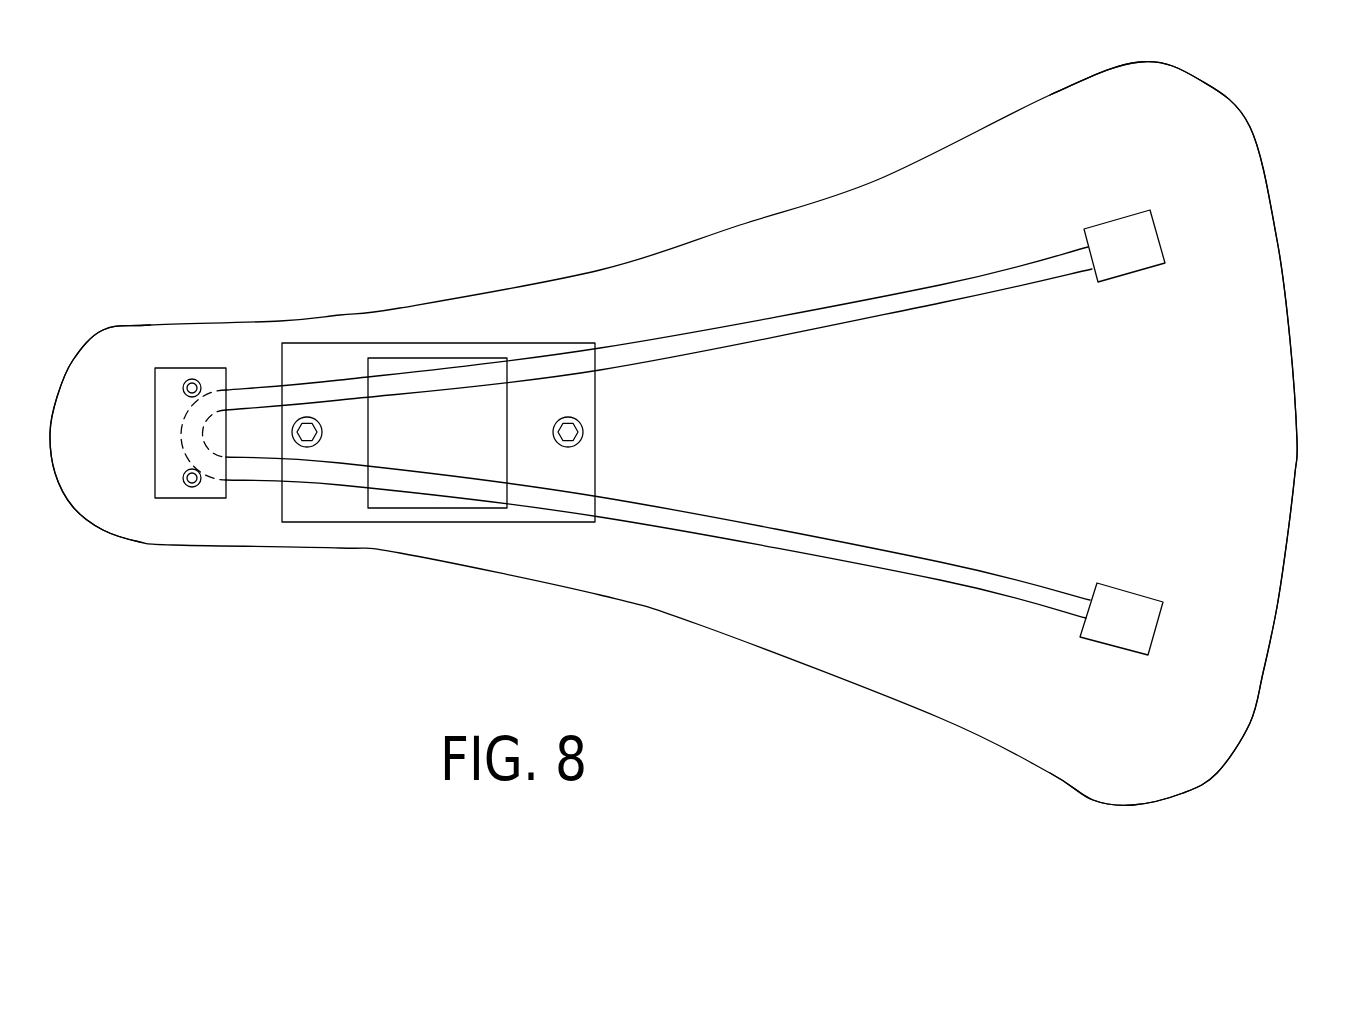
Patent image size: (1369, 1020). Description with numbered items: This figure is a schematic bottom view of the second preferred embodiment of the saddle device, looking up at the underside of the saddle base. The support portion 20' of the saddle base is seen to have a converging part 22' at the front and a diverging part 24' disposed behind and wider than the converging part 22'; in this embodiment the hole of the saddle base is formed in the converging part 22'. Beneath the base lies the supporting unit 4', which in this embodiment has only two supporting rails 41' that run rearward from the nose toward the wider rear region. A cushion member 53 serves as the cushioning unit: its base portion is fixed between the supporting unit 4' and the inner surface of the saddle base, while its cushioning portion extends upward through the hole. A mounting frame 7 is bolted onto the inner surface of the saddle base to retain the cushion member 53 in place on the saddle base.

The support portion 20' is at (673, 434).
The converging part 22' is at (100, 404).
The diverging part 24' is at (1206, 434).
The supporting unit 4' is at (673, 472).
The supporting rails 41' is at (659, 434).
The mounting frame 7 is at (530, 330).
The cushion member 53 is at (398, 367).